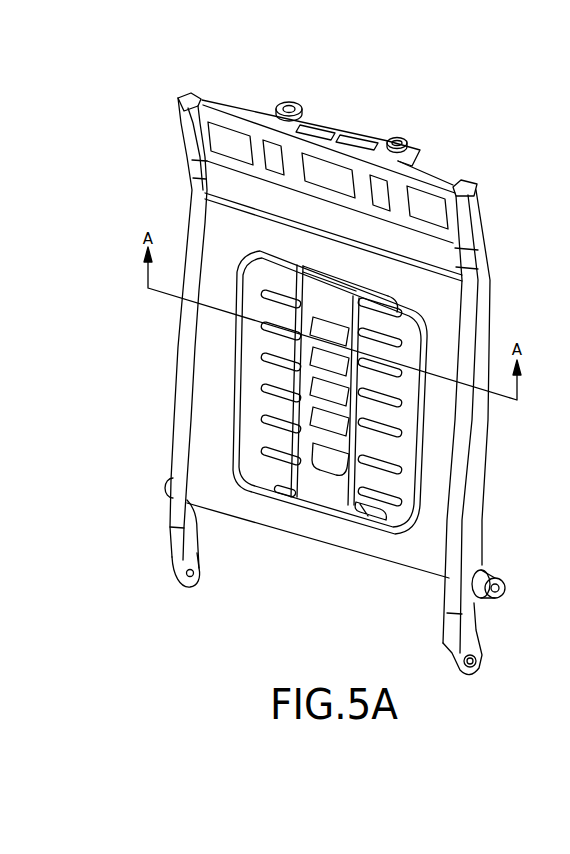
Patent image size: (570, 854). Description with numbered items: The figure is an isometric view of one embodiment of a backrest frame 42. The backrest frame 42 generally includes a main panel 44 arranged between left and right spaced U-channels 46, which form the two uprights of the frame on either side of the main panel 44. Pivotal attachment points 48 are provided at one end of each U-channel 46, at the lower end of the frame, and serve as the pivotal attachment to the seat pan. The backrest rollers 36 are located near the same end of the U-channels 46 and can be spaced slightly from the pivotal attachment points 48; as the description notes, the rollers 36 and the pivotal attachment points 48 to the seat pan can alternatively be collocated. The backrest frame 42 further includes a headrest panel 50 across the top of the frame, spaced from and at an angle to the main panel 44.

The backrest frame 42 is at (479, 130).
The main panel 44 is at (446, 302).
The U-channels 46 is at (192, 132).
The headrest panel 50 is at (252, 123).
The backrest rollers 36 is at (168, 485).
The pivotal attachment points 48 is at (193, 578).